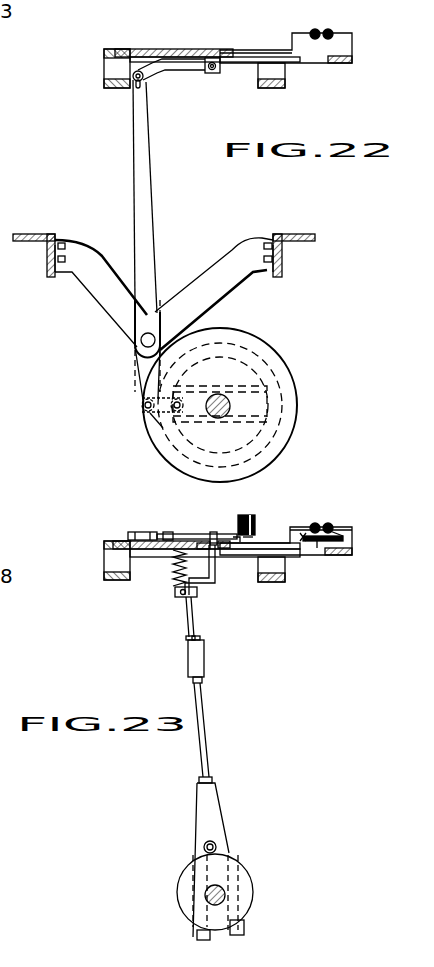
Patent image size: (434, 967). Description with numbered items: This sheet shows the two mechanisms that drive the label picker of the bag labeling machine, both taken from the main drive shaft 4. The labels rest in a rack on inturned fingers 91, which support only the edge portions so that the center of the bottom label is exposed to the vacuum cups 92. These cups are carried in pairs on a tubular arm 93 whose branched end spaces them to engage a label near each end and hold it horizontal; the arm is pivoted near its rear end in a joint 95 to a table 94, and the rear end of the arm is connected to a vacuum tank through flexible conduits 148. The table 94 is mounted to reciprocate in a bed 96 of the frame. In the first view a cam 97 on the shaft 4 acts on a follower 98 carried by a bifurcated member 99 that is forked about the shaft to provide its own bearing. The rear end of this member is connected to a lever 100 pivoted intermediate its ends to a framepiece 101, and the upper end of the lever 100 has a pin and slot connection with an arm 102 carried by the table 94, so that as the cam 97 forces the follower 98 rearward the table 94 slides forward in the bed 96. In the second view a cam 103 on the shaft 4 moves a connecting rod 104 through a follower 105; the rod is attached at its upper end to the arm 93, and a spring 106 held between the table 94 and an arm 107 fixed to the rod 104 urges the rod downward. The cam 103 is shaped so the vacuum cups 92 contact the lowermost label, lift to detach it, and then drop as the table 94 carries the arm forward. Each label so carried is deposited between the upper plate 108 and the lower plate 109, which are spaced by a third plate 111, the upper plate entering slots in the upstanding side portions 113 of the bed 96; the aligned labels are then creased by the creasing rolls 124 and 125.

In FIG. 22, the main drive shaft 4 is at (221, 396).
In FIG. 23, the main drive shaft 4 is at (207, 898).
In FIG. 23, the inturned fingers 91 is at (254, 515).
In FIG. 23, the vacuum cups 92 is at (253, 537).
In FIG. 23, the tubular arm 93 is at (191, 539).
In FIG. 22, the table 94 is at (160, 49).
In FIG. 23, the table 94 is at (155, 551).
In FIG. 23, the joint 95 is at (165, 532).
In FIG. 22, the bed 96 is at (104, 52).
In FIG. 23, the bed 96 is at (104, 547).
In FIG. 22, the cam 97 is at (290, 373).
In FIG. 22, the follower 98 is at (168, 418).
In FIG. 22, the bifurcated member 99 is at (240, 383).
In FIG. 22, the lever 100 is at (136, 341).
In FIG. 22, the framepiece 101 is at (215, 262).
In FIG. 22, the arm 102 is at (185, 76).
In FIG. 23, the cam 103 is at (253, 880).
In FIG. 23, the connecting rod 104 is at (222, 795).
In FIG. 23, the follower 105 is at (204, 847).
In FIG. 23, the spring 106 is at (172, 578).
In FIG. 23, the arm 107 is at (183, 598).
In FIG. 23, the upper plate 108 is at (338, 532).
In FIG. 23, the lower plate 109 is at (317, 548).
In FIG. 23, the third plate 111 is at (343, 538).
In FIG. 22, the upstanding side portions 113 is at (345, 52).
In FIG. 23, the upstanding side portions 113 is at (345, 551).
In FIG. 22, the creasing roll 124 is at (331, 30).
In FIG. 23, the creasing roll 124 is at (315, 523).
In FIG. 22, the creasing roll 125 is at (317, 29).
In FIG. 23, the creasing roll 125 is at (331, 522).
In FIG. 23, the flexible conduits 148 is at (128, 535).